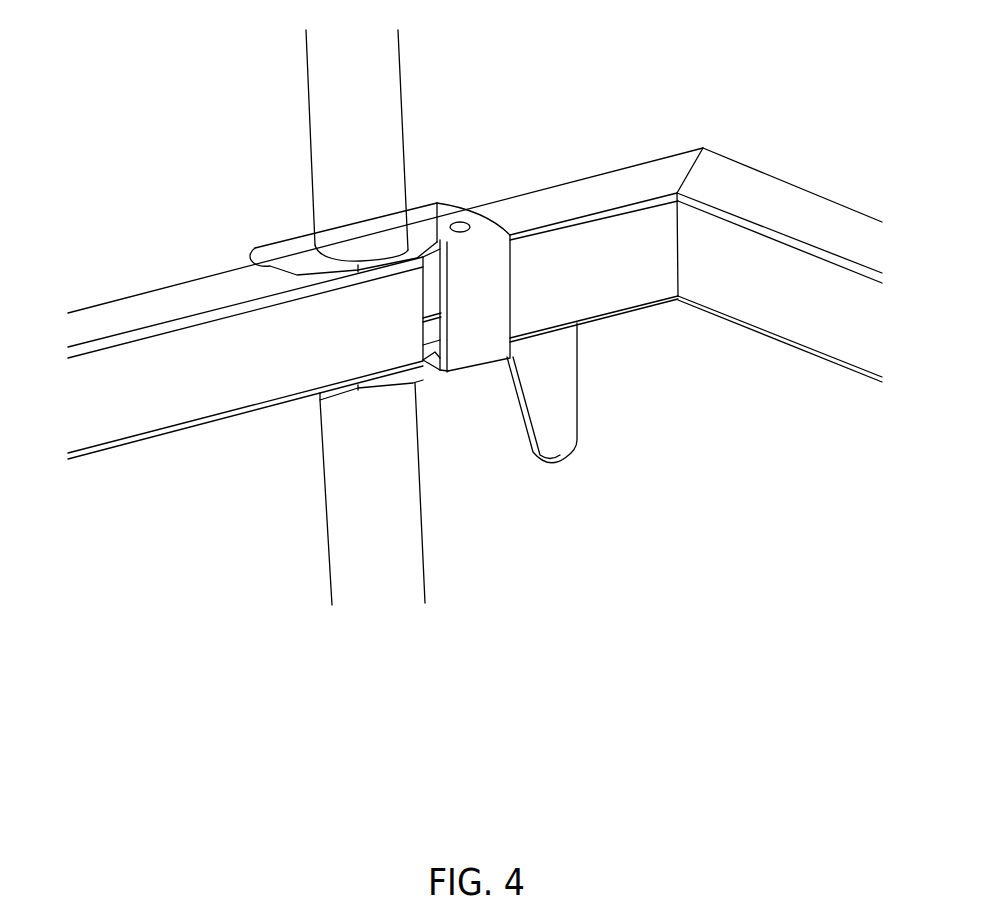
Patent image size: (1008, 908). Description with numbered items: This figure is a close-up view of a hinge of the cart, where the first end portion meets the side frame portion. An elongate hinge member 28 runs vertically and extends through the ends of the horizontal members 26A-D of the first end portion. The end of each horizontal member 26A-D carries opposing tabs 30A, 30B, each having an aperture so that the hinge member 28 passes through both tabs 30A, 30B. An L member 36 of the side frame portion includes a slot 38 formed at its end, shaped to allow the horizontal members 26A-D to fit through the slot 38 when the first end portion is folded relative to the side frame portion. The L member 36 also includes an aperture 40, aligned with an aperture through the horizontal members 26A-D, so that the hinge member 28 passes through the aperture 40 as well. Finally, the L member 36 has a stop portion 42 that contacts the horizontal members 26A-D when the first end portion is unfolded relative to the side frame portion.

The horizontal members 26A-D is at (98, 303).
The hinge member 28 is at (400, 75).
The opposing tab 30A is at (419, 257).
The opposing tab 30B is at (432, 362).
The L member 36 is at (808, 192).
The slot 38 is at (437, 308).
The aperture 40 is at (313, 246).
The stop portion 42 is at (257, 248).